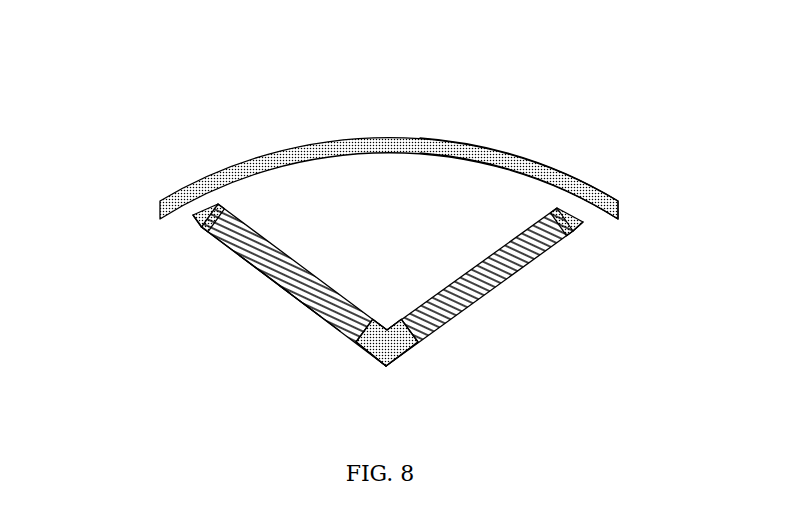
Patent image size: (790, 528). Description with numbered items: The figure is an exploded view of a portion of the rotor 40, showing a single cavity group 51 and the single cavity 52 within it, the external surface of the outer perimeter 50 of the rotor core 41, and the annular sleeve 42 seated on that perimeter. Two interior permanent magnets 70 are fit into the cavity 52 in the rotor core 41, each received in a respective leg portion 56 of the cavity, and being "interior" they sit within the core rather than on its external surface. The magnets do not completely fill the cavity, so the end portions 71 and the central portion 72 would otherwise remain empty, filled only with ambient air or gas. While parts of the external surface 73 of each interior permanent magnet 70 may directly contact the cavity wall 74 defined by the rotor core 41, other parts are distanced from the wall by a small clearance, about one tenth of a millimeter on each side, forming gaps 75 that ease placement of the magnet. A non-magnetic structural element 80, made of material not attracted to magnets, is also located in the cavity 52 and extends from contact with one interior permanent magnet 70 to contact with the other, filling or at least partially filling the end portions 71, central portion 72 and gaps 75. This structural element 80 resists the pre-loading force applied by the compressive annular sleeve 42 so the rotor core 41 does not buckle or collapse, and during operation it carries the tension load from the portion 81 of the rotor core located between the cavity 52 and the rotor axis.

The rotor 40 is at (118, 158).
The rotor core 41 is at (370, 208).
The annular sleeve 42 is at (551, 178).
The outer perimeter 50 is at (459, 153).
The cavity group 51 is at (390, 86).
The cavity 52 is at (410, 358).
The leg portion 56 is at (268, 240).
The interior permanent magnet 70 is at (292, 261).
The end portion 71 is at (199, 222).
The central portion 72 is at (378, 364).
The external surface 73 is at (251, 267).
The cavity wall 74 is at (280, 286).
The gap 75 is at (308, 312).
The non-magnetic structural element 80 is at (392, 338).
The portion of rotor core 81 is at (370, 428).